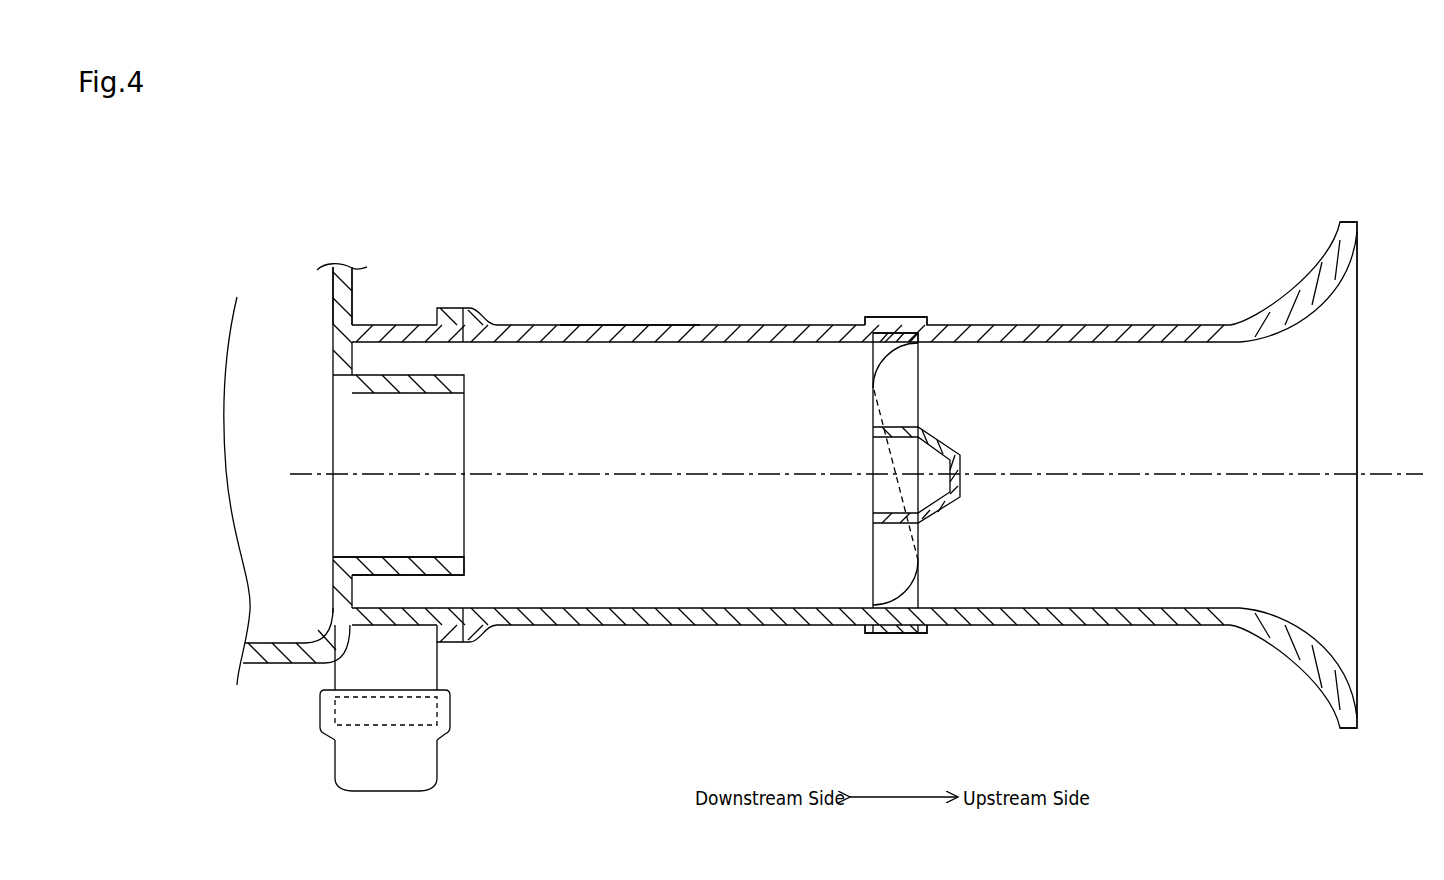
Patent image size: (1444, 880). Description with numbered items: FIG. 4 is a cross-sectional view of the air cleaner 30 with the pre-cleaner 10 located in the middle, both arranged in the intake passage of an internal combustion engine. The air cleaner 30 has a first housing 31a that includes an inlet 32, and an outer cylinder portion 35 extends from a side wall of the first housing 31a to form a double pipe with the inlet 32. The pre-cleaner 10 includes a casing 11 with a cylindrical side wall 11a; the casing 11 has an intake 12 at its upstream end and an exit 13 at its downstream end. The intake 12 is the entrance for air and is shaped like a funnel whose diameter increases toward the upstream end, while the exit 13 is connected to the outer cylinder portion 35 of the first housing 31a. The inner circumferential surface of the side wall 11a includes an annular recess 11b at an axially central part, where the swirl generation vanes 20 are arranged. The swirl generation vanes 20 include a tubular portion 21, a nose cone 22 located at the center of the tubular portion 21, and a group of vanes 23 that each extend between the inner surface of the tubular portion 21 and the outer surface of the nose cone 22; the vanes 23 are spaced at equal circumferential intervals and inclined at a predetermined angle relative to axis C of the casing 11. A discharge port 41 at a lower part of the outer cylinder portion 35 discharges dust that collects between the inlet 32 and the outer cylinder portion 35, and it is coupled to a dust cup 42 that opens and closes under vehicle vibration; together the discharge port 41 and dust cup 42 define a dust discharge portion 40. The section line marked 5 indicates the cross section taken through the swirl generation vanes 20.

The pre-cleaner 10 is at (1101, 206).
The casing 11 is at (708, 323).
The cylindrical side wall 11a is at (636, 325).
The annular recess 11b is at (862, 348).
The intake 12 is at (1351, 218).
The exit 13 is at (461, 305).
The swirl generation vanes 20 is at (926, 366).
The tubular portion 21 is at (913, 336).
The nose cone 22 is at (963, 466).
The vanes 23 is at (887, 550).
The air cleaner 30 is at (257, 689).
The first housing 31a is at (352, 296).
The inlet 32 is at (340, 557).
The outer cylinder portion 35 is at (420, 626).
The dust discharge portion 40 is at (430, 720).
The discharge port 41 is at (437, 660).
The dust cup 42 is at (413, 765).
The section line 5 is at (918, 268).
The axis C is at (1404, 477).